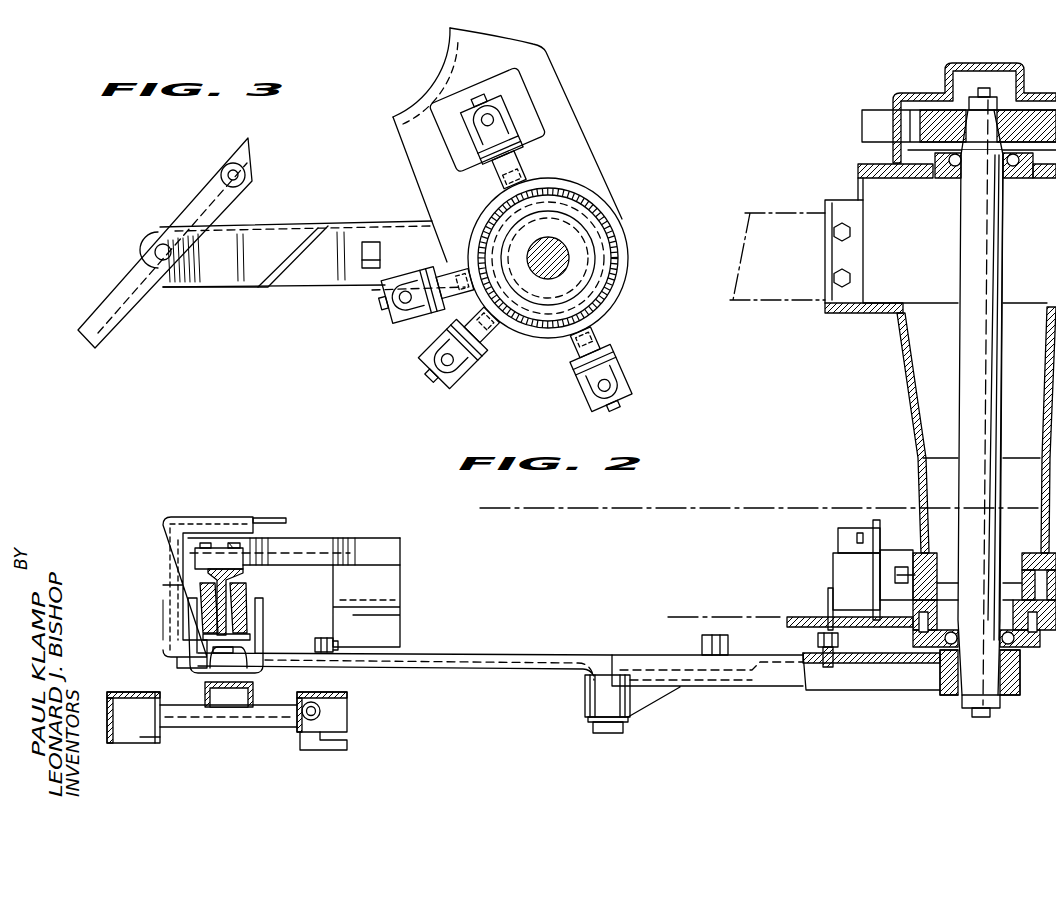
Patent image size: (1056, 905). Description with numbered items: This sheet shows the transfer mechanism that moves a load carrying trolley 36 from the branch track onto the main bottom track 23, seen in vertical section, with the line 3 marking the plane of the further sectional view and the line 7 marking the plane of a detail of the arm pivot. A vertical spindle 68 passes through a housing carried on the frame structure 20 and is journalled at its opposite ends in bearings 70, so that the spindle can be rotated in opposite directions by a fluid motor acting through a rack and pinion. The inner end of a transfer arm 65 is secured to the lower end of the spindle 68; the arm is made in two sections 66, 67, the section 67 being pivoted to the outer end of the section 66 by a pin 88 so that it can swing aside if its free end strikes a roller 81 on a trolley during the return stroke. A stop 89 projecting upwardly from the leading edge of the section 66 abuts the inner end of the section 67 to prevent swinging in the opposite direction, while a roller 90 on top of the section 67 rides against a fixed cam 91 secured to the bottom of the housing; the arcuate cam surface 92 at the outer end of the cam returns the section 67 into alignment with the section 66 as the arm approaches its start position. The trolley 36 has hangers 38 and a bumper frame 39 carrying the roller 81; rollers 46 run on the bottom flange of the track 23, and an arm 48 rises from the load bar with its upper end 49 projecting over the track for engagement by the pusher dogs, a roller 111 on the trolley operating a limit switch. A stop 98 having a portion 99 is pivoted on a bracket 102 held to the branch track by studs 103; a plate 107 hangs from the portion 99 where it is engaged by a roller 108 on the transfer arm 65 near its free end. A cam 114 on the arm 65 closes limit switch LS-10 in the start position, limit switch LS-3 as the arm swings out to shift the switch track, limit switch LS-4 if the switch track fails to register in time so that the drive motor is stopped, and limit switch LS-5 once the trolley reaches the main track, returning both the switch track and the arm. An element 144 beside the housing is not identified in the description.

In FIG. 2, the section line 3— 3 is at (515, 475).
In FIG. 2, the section line 7— 7 is at (686, 614).
In FIG. 2, the frame structure 20 is at (779, 306).
In FIG. 2, the bottom track 23 is at (240, 582).
In FIG. 2, the load carrying trolley 36 is at (162, 600).
In FIG. 2, the hangers 38 is at (264, 649).
In FIG. 2, the bumper frame 39 is at (260, 718).
In FIG. 2, the rollers 46 is at (205, 590).
In FIG. 2, the arm 48 is at (175, 625).
In FIG. 2, the upper end of arm 49 is at (235, 507).
In FIG. 3, the transfer arm 65 is at (83, 312).
In FIG. 2, the transfer arm 65 is at (564, 672).
In FIG. 3, the section of transfer arm 66 is at (323, 276).
In FIG. 2, the section of transfer arm 66 is at (782, 682).
In FIG. 3, the section of transfer arm 67 is at (128, 282).
In FIG. 2, the section of transfer arm 67 is at (471, 670).
In FIG. 3, the spindle 68 is at (560, 254).
In FIG. 2, the spindle 68 is at (1003, 293).
In FIG. 2, the bearings 70 is at (953, 172).
In FIG. 2, the roller 81 is at (255, 681).
In FIG. 3, the pin 88 is at (163, 244).
In FIG. 2, the pin 88 is at (623, 728).
In FIG. 3, the stop 89 is at (249, 288).
In FIG. 2, the stop 89 is at (638, 660).
In FIG. 3, the roller 90 is at (241, 173).
In FIG. 2, the roller 90 is at (731, 646).
In FIG. 3, the fixed cam 91 is at (603, 197).
In FIG. 2, the fixed cam 91 is at (797, 617).
In FIG. 3, the arcuate cam surface 92 is at (427, 84).
In FIG. 2, the stop arm 98 is at (313, 535).
In FIG. 2, the portion of stop arm 99 is at (341, 548).
In FIG. 2, the bracket 102 is at (213, 555).
In FIG. 2, the studs 103 is at (233, 550).
In FIG. 2, the plate 107 is at (401, 605).
In FIG. 2, the roller 108 is at (322, 637).
In FIG. 2, the roller 111 is at (272, 518).
In FIG. 3, the cam 114 is at (369, 243).
In FIG. 2, the stop block 144 is at (840, 648).
In FIG. 3, the limit switch LS-3 is at (410, 325).
In FIG. 2, the limit switch LS-3 is at (838, 563).
In FIG. 3, the limit switch LS-4 is at (470, 362).
In FIG. 3, the limit switch LS-5 is at (612, 365).
In FIG. 3, the limit switch LS-10 is at (527, 153).